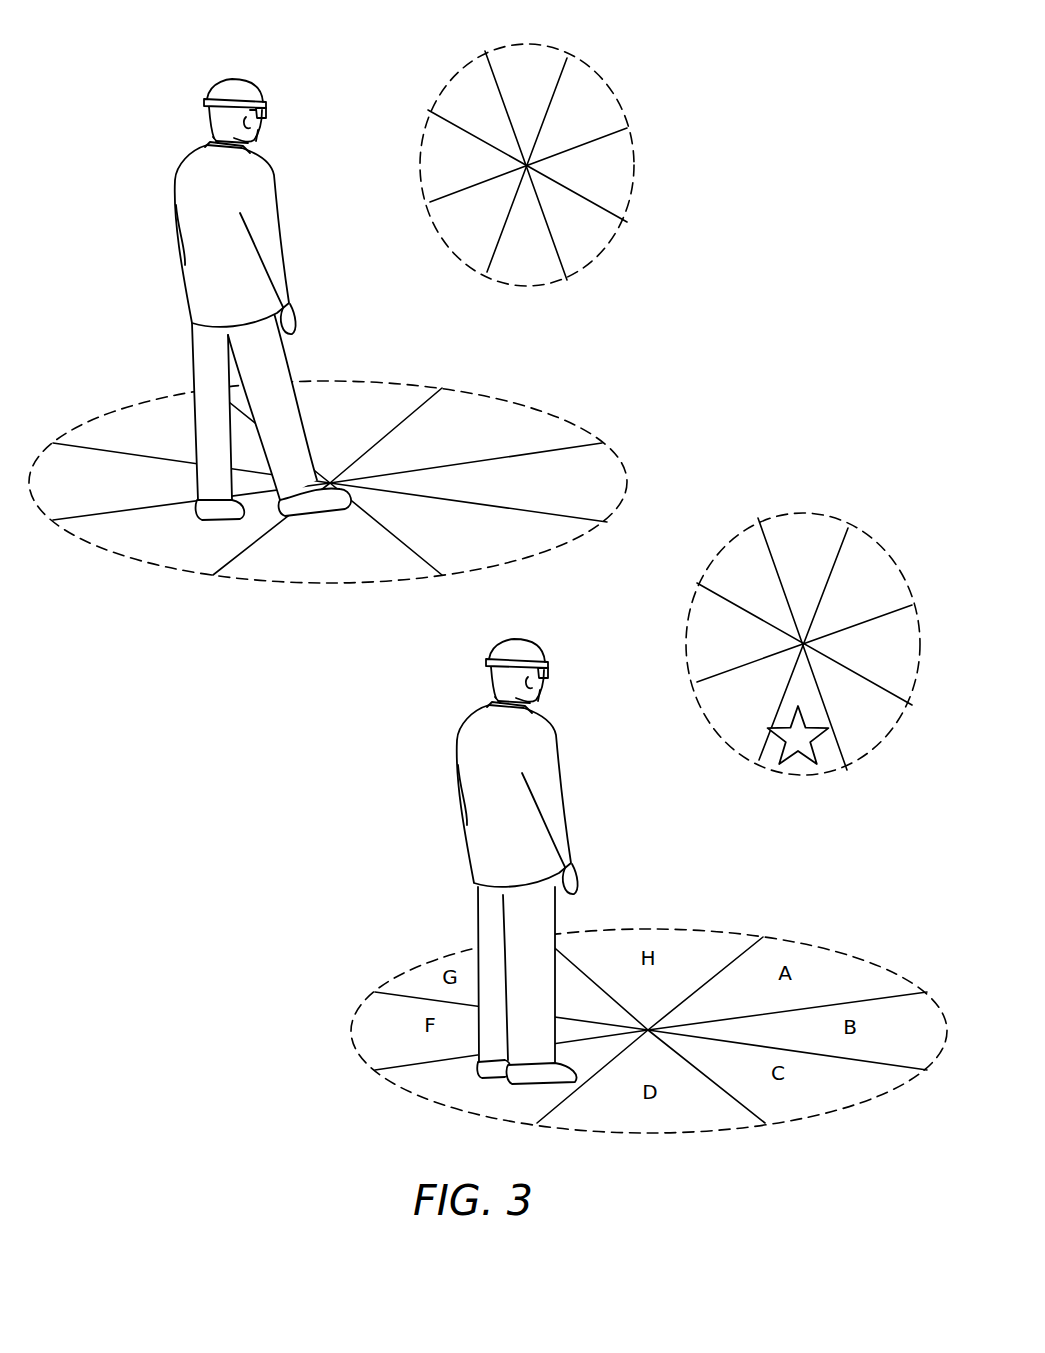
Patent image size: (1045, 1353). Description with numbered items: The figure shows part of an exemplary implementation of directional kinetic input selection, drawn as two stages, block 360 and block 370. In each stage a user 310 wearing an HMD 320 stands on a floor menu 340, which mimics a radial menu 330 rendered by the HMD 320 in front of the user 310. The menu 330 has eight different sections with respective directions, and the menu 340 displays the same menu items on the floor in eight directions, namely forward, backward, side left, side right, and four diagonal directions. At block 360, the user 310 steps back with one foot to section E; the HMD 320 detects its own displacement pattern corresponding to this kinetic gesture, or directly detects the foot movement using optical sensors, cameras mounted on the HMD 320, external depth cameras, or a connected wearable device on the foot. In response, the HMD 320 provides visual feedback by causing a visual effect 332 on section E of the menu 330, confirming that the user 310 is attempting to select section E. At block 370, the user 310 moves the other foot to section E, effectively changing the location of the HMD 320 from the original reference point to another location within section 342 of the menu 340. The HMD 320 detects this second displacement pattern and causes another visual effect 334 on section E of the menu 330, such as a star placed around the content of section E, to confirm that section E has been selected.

The user 310 is at (173, 192).
The HMD 320 is at (264, 113).
The menu 330 is at (600, 83).
The visual effect 332 is at (517, 272).
The visual effect 334 is at (785, 758).
The menu 340 is at (127, 408).
The section 342 is at (165, 556).
The block 360 is at (106, 65).
The block 370 is at (90, 702).